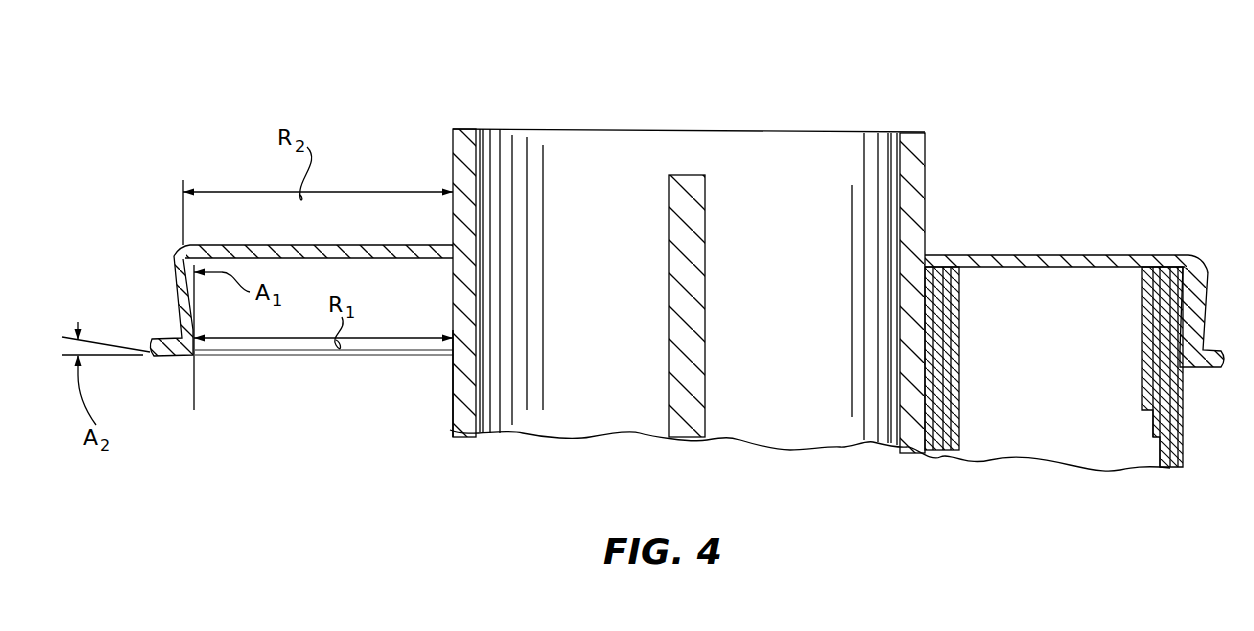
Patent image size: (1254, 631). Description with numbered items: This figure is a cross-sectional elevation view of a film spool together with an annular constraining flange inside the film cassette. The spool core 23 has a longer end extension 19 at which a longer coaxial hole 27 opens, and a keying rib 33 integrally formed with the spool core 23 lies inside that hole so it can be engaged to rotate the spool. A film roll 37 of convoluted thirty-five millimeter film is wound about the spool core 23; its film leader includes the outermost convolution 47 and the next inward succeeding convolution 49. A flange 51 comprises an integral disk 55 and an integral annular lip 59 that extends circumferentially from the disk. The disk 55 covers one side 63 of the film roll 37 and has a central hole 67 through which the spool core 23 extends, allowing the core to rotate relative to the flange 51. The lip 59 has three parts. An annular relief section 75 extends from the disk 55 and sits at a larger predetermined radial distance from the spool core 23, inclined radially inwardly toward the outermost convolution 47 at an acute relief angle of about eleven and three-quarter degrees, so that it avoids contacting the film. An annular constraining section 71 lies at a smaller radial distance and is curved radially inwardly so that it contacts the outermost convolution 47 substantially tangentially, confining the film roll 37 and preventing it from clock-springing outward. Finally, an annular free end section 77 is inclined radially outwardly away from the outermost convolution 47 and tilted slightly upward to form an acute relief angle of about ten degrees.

The longer end extension 19 is at (467, 129).
The spool core 23 is at (453, 375).
The longer coaxial hole 27 is at (900, 158).
The keying rib 33 is at (706, 232).
The film roll 37 is at (1040, 410).
The outermost convolution 47 is at (190, 387).
The next inward succeeding convolution 49 is at (1180, 440).
The flange 51 is at (163, 252).
The disk 55 is at (363, 245).
The annular lip 59 is at (172, 272).
The side of film roll 63 is at (1140, 252).
The central hole 67 is at (465, 248).
The annular constraining section 71 is at (182, 333).
The annular relief section 75 is at (175, 300).
The annular free end section 77 is at (155, 358).